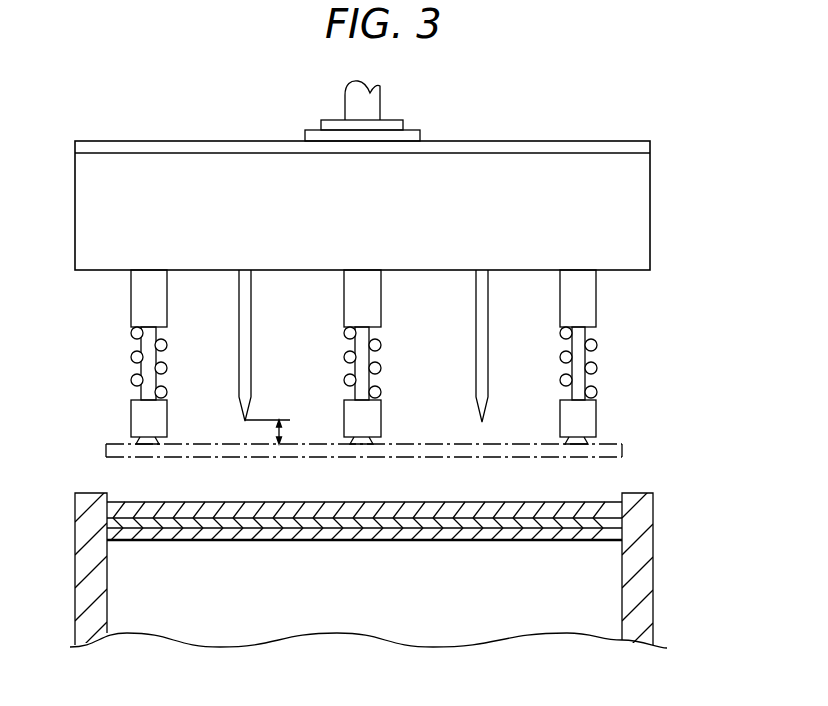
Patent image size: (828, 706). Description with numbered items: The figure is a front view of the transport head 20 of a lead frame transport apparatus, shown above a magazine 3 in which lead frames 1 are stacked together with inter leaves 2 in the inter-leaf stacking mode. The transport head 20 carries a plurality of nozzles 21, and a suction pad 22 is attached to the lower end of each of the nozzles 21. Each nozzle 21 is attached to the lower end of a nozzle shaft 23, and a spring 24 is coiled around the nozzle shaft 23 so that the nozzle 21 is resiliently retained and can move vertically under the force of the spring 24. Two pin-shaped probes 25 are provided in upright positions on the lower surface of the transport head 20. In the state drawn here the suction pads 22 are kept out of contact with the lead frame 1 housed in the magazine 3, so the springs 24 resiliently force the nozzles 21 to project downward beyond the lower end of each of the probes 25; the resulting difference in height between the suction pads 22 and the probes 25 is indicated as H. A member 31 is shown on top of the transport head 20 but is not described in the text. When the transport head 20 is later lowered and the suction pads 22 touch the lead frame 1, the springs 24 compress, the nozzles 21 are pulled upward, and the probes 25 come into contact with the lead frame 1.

The lead frame 1 is at (364, 567).
The inter leaf 2 is at (333, 523).
The magazine 3 is at (638, 583).
The transport head 20 is at (185, 170).
The nozzle 21 is at (158, 417).
The suction pad 22 is at (142, 439).
The nozzle shaft 23 is at (148, 363).
The spring 24 is at (132, 331).
The probe 25 is at (244, 360).
The drive shaft 31 is at (382, 103).
The difference in height H is at (285, 433).